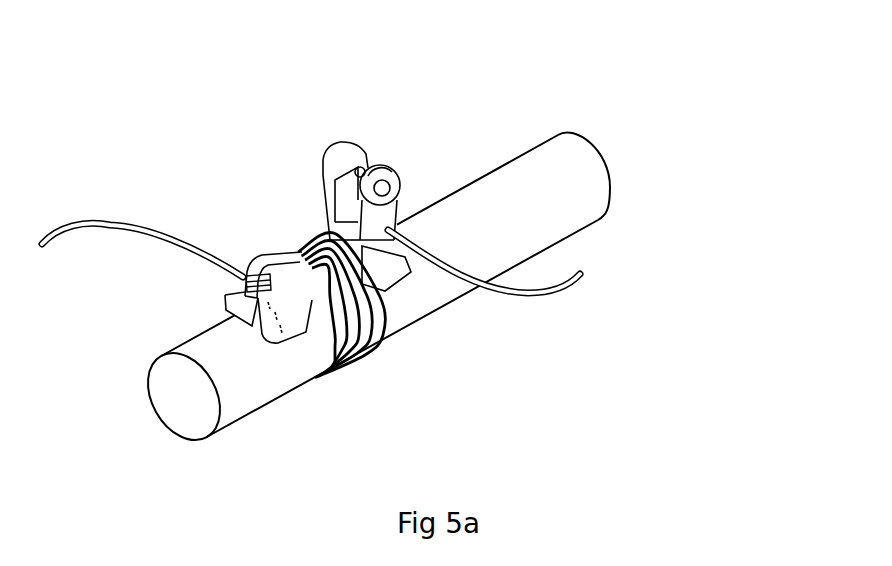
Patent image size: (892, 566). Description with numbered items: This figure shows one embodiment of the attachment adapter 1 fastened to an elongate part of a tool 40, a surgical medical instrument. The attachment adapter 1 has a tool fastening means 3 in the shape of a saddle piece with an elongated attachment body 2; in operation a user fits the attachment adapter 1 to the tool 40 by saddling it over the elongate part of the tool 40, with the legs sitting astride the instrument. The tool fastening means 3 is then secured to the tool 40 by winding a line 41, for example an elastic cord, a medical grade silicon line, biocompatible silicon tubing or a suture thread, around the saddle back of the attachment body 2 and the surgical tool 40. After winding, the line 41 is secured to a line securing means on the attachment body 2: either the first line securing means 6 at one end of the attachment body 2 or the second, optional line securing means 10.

The attachment adapter 1 is at (347, 98).
The attachment body 2 is at (295, 242).
The tool fastening means 3 is at (208, 284).
The first line securing means 6 is at (247, 280).
The second line securing means 10 is at (400, 214).
The tool 40 is at (512, 227).
The line 41 is at (83, 226).